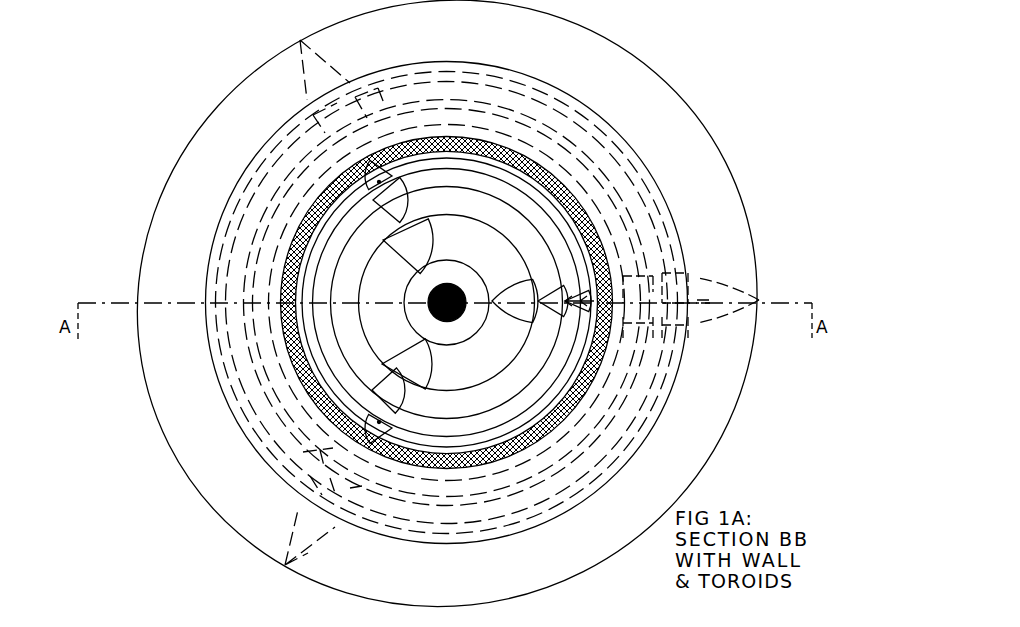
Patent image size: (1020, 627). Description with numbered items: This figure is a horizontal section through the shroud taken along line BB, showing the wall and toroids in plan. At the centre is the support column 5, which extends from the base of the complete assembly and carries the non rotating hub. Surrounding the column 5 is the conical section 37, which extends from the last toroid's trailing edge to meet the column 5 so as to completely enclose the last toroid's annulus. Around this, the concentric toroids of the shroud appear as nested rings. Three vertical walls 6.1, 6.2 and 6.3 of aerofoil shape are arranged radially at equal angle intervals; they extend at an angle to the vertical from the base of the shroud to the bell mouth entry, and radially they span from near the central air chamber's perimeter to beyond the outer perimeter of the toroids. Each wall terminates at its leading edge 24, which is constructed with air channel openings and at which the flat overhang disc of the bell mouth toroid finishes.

The leading edge of the wall 24 is at (759, 299).
The conical section 37 is at (468, 277).
The column 5 is at (450, 317).
The vertical wall 6.1 is at (404, 350).
The vertical wall 6.2 is at (517, 315).
The vertical wall 6.3 is at (395, 253).